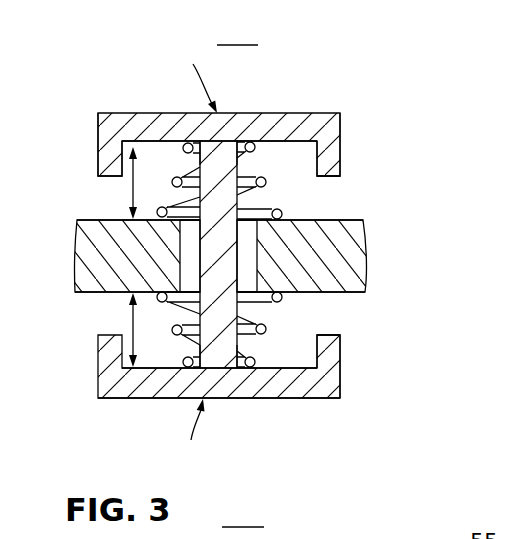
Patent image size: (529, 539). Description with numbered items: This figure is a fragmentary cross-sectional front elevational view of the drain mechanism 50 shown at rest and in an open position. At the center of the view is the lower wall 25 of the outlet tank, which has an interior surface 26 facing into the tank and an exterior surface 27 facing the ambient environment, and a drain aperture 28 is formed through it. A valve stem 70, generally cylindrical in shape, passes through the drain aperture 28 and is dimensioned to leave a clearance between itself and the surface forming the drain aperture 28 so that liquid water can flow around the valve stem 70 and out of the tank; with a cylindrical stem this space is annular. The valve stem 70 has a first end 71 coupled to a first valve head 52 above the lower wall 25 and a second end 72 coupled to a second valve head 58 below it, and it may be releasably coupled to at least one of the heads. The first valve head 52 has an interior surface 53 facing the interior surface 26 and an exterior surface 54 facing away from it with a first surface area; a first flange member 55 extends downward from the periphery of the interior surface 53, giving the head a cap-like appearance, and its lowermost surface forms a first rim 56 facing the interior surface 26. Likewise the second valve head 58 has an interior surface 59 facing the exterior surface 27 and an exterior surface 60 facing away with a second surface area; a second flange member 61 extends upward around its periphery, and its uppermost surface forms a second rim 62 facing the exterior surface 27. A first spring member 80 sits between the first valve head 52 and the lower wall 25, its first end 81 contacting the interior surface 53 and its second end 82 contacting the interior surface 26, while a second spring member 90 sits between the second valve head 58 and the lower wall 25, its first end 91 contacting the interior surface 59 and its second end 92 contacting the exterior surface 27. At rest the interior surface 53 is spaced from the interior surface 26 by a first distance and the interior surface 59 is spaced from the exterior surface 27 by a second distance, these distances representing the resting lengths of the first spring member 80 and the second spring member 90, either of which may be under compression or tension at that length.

The lower wall 25 is at (357, 257).
The interior surface of the lower wall 26 is at (352, 220).
The exterior surface of the lower wall 27 is at (358, 291).
The drain aperture 28 is at (190, 247).
The drain mechanism 50 is at (368, 80).
The first valve head 52 is at (108, 116).
The interior surface of the first valve head 53 is at (280, 143).
The exterior surface of the first valve head 54 is at (292, 113).
The first flange member 55 is at (341, 155).
The first rim 56 is at (332, 178).
The second valve head 58 is at (320, 400).
The interior surface of the second valve head 59 is at (281, 368).
The exterior surface of the second valve head 60 is at (275, 400).
The second flange member 61 is at (331, 353).
The second rim 62 is at (318, 337).
The valve stem 70 is at (237, 265).
The first end of the valve stem 71 is at (236, 118).
The second end of the valve stem 72 is at (220, 384).
The first spring member 80 is at (154, 147).
The first end of the first spring member 81 is at (188, 143).
The second end of the first spring member 82 is at (160, 217).
The second spring member 90 is at (143, 352).
The first end of the second spring member 91 is at (178, 370).
The second end of the second spring member 92 is at (160, 296).